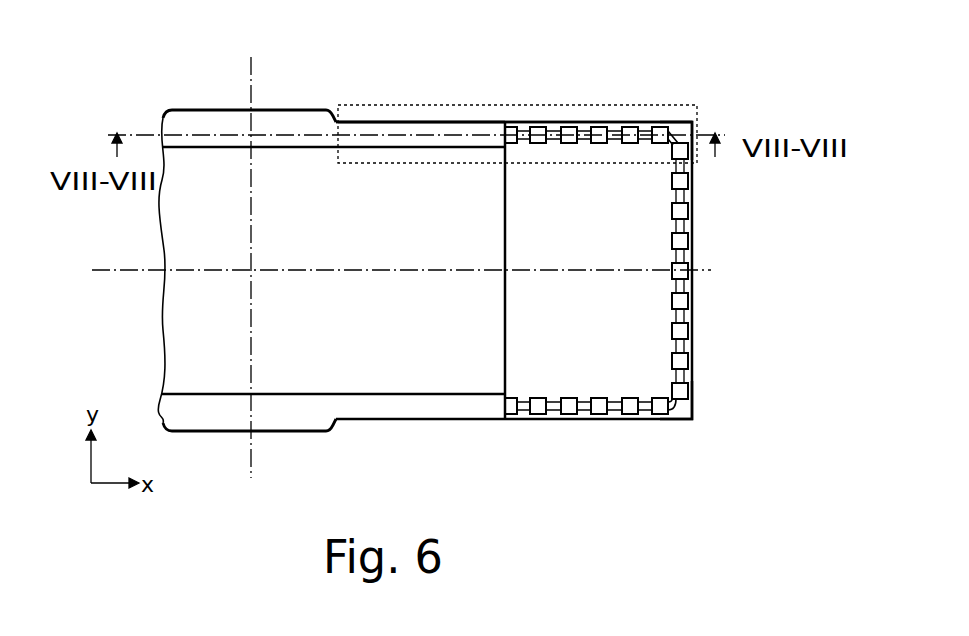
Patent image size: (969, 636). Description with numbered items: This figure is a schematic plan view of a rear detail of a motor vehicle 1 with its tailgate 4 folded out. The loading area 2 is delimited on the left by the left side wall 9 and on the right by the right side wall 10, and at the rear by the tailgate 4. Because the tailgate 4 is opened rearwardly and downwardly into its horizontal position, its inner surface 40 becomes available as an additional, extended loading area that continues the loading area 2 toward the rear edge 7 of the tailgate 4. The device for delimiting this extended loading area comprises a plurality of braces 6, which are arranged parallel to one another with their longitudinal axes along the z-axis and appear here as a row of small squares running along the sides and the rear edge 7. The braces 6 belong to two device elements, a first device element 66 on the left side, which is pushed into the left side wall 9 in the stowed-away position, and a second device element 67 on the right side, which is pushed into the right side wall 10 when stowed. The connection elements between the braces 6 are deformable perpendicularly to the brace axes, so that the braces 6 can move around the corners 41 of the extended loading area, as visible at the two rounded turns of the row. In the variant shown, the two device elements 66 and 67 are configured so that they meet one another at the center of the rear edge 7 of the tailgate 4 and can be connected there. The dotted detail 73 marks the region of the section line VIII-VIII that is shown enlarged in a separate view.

The motor vehicle 1 is at (667, 85).
The loading area 2 is at (329, 343).
The tailgate 4 is at (578, 343).
The braces 6 is at (508, 127).
The rear edge 7 is at (690, 292).
The left side wall 9 is at (412, 402).
The right side wall 10 is at (360, 127).
The inner surface 40 is at (628, 219).
The corners 41 is at (690, 121).
The first device element 66 is at (683, 342).
The second device element 67 is at (683, 228).
The detail 73 is at (427, 117).